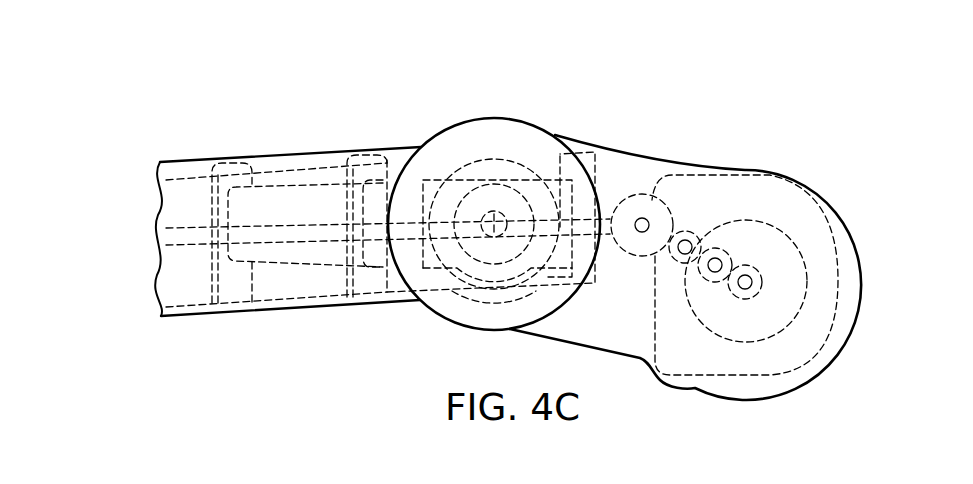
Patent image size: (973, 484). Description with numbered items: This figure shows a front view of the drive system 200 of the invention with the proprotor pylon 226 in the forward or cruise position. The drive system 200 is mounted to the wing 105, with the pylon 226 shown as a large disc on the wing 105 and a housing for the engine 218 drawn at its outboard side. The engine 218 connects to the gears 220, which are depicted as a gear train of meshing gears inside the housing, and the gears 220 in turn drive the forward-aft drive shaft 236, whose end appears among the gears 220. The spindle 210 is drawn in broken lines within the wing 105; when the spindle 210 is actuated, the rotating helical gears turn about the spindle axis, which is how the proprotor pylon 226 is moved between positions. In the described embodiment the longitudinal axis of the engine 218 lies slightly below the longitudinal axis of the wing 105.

The drive system 200 is at (748, 68).
The wing 105 is at (305, 152).
The spindle 210 is at (303, 267).
The proprotor pylon 226 is at (462, 102).
The engine 218 is at (840, 280).
The gears 220 is at (698, 205).
The forward-aft drive shaft 236 is at (636, 220).